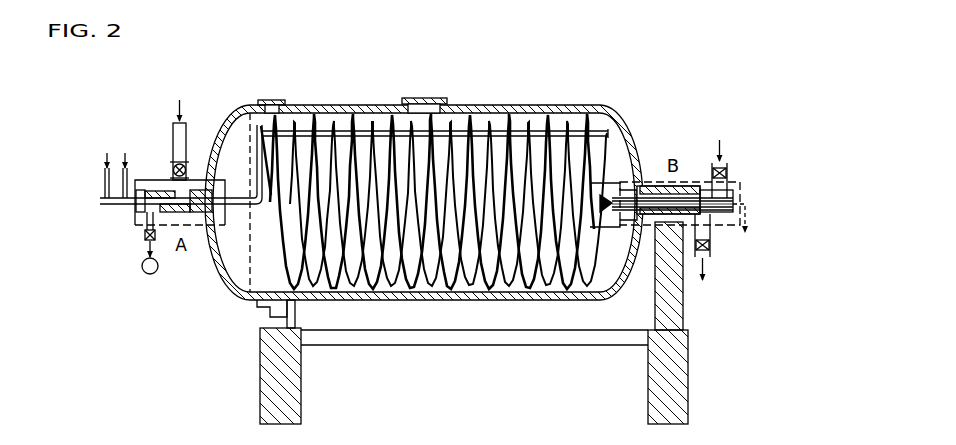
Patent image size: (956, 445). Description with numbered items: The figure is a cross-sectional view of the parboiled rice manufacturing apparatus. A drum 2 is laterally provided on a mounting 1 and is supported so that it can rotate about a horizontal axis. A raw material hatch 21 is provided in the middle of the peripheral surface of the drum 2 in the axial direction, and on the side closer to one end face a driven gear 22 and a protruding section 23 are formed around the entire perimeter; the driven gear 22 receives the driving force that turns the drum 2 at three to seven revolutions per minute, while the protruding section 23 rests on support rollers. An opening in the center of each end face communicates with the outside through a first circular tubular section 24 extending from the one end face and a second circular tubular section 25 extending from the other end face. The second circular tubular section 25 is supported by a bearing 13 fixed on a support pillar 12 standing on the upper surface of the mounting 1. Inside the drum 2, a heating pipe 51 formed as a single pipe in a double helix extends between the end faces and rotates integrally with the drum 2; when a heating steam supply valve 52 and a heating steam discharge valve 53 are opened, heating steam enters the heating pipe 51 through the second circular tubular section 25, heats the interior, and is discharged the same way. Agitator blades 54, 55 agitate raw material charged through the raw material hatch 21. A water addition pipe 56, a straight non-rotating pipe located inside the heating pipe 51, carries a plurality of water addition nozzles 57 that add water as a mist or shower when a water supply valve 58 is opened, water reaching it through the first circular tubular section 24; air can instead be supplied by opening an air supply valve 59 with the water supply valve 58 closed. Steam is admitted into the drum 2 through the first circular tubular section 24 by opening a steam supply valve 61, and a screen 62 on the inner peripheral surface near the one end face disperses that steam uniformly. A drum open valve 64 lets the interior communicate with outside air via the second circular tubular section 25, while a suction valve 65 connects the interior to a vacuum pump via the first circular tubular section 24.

The mounting 1 is at (688, 341).
The drum 2 is at (583, 106).
The support pillar 12 is at (684, 310).
The bearing 13 is at (655, 236).
The raw material hatch 21 is at (426, 98).
The driven gear 22 is at (262, 100).
The protruding section 23 is at (277, 101).
The first circular tubular section 24 is at (192, 190).
The second circular tubular section 25 is at (648, 190).
The heating pipe 51 is at (434, 179).
The heating steam supply valve 52 is at (728, 172).
The heating steam discharge valve 53 is at (710, 245).
The agitator blade 54 is at (518, 130).
The agitator blade 55 is at (540, 128).
The water addition pipe 56 is at (362, 118).
The water addition nozzles 57 is at (468, 126).
The water supply valve 58 is at (107, 190).
The air supply valve 59 is at (125, 190).
The steam supply valve 61 is at (173, 166).
The screen 62 is at (248, 258).
The drum open valve 64 is at (735, 200).
The suction valve 65 is at (145, 235).